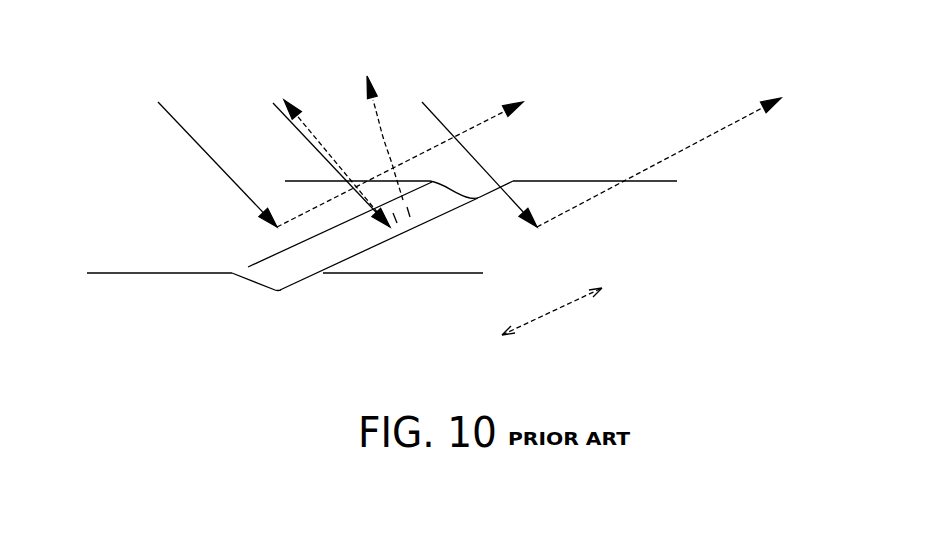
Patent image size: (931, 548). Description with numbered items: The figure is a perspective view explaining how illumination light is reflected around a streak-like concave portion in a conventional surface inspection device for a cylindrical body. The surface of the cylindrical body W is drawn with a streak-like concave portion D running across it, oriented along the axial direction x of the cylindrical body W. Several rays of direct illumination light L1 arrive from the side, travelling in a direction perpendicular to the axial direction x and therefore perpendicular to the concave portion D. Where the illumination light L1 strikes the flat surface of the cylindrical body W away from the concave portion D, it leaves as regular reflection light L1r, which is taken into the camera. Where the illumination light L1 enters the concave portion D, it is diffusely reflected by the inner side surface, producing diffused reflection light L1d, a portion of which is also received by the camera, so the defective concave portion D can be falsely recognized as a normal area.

The direct illumination light L1 is at (187, 132).
The diffused reflection light L1d is at (316, 128).
The regular reflection light L1r is at (478, 125).
The concave portion D is at (274, 291).
The cylindrical body W is at (388, 287).
The axial direction x is at (552, 313).